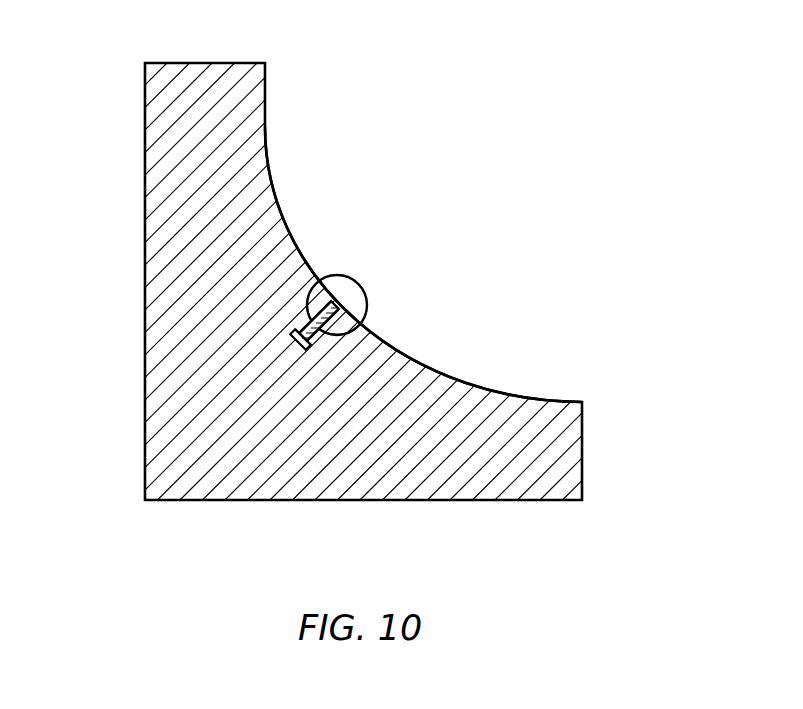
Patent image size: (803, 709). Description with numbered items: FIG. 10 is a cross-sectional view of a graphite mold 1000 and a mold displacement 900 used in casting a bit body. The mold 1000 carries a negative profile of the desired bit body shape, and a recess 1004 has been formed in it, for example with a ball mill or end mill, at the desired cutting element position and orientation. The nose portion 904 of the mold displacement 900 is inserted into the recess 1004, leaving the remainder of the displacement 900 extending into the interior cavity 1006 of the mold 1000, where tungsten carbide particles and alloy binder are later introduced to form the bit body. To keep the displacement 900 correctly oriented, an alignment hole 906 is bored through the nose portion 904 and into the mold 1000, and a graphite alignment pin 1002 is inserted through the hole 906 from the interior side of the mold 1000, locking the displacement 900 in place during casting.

The graphite mold 1000 is at (558, 428).
The mold displacement 900 is at (366, 295).
The nose portion 904 is at (355, 334).
The graphite alignment pin 1002 is at (306, 337).
The alignment hole 906 is at (310, 312).
The recess 1004 is at (312, 292).
The interior cavity 1006 is at (410, 195).